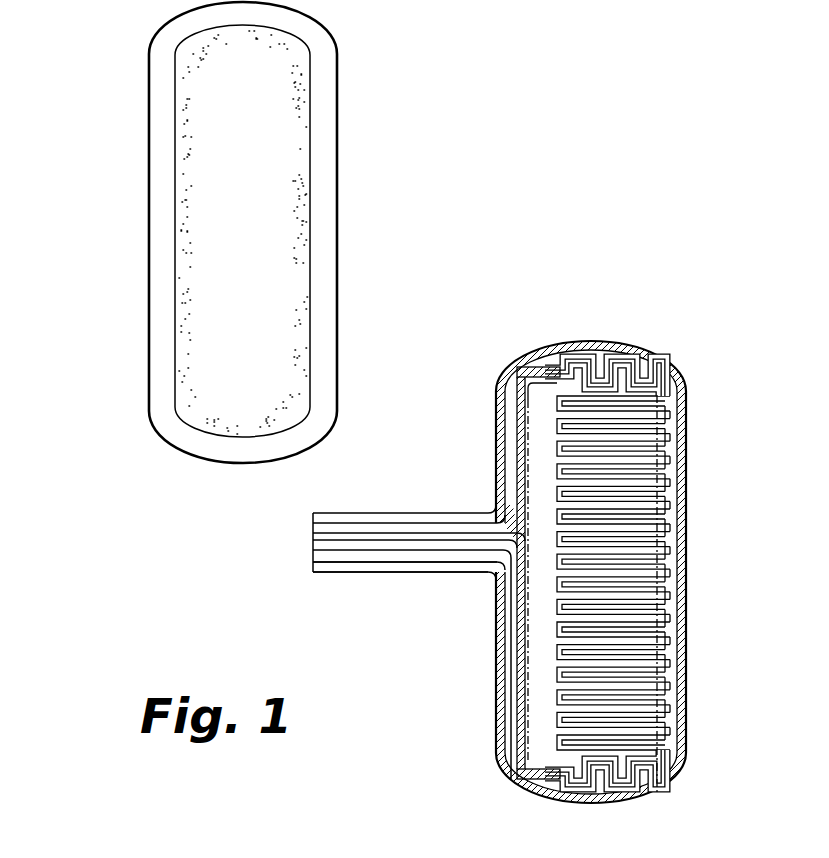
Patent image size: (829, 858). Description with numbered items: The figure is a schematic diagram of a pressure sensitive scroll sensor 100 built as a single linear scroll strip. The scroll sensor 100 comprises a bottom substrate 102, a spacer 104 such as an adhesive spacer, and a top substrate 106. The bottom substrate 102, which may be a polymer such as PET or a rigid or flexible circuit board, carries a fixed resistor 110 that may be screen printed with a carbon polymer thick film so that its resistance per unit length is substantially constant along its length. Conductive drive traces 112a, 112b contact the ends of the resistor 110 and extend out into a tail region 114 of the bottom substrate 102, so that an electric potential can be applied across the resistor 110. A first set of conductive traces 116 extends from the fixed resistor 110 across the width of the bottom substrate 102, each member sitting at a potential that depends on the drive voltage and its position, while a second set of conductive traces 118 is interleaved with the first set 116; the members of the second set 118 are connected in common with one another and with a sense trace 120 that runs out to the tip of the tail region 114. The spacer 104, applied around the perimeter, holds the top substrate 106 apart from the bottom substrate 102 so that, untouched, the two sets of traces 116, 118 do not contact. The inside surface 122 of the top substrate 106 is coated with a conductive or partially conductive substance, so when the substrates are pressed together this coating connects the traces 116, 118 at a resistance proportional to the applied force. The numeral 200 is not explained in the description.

The pressure sensitive scroll sensor 100 is at (666, 83).
The bottom substrate 102 is at (597, 806).
The spacer 104 is at (543, 358).
The top substrate 106 is at (148, 265).
The fixed resistor 110 is at (538, 708).
The conductive drive trace 112a is at (313, 524).
The conductive drive trace 112b is at (313, 541).
The tail region 114 is at (485, 580).
The first set of conductive traces 116 is at (578, 683).
The second set of conductive traces 118 is at (625, 573).
The sense trace 120 is at (313, 563).
The inside surface of the top substrate 122 is at (310, 237).
The sensor system 200 is at (523, 854).